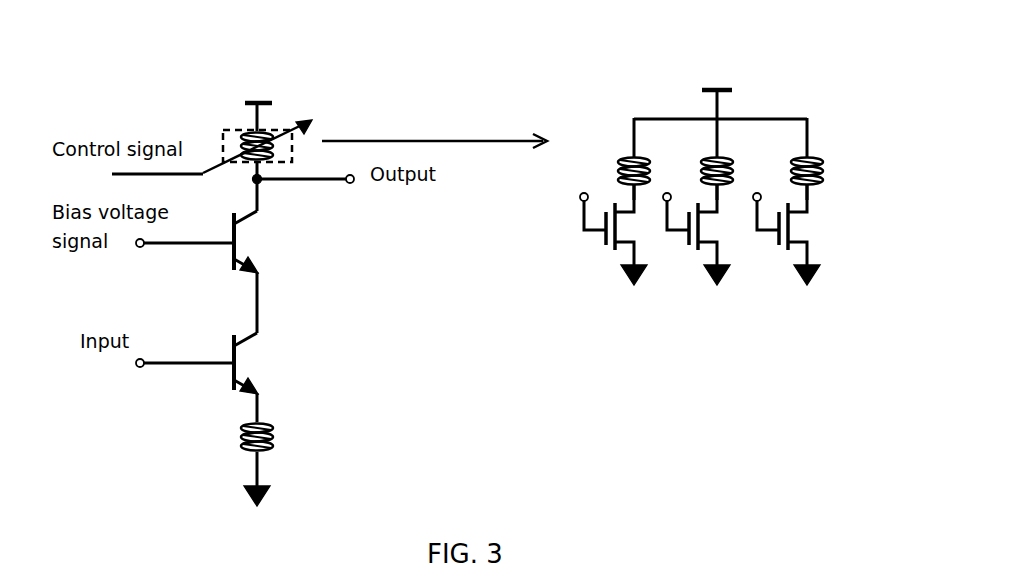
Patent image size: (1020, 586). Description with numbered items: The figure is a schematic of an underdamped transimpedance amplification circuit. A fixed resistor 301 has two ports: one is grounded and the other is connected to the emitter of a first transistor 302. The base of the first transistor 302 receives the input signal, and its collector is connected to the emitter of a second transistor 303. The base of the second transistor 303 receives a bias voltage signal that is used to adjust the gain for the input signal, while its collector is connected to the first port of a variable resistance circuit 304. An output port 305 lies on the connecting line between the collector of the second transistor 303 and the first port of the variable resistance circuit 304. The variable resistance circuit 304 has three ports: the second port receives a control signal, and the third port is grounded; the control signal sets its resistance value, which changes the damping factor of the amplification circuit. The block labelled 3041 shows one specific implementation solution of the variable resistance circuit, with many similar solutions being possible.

The variable resistance circuit 304 is at (225, 132).
The output port 305 is at (352, 184).
The second transistor 303 is at (268, 240).
The first transistor 302 is at (270, 378).
The fixed resistor 301 is at (278, 440).
The specific implementation solution of the variable resistance circuit 3041 is at (790, 97).